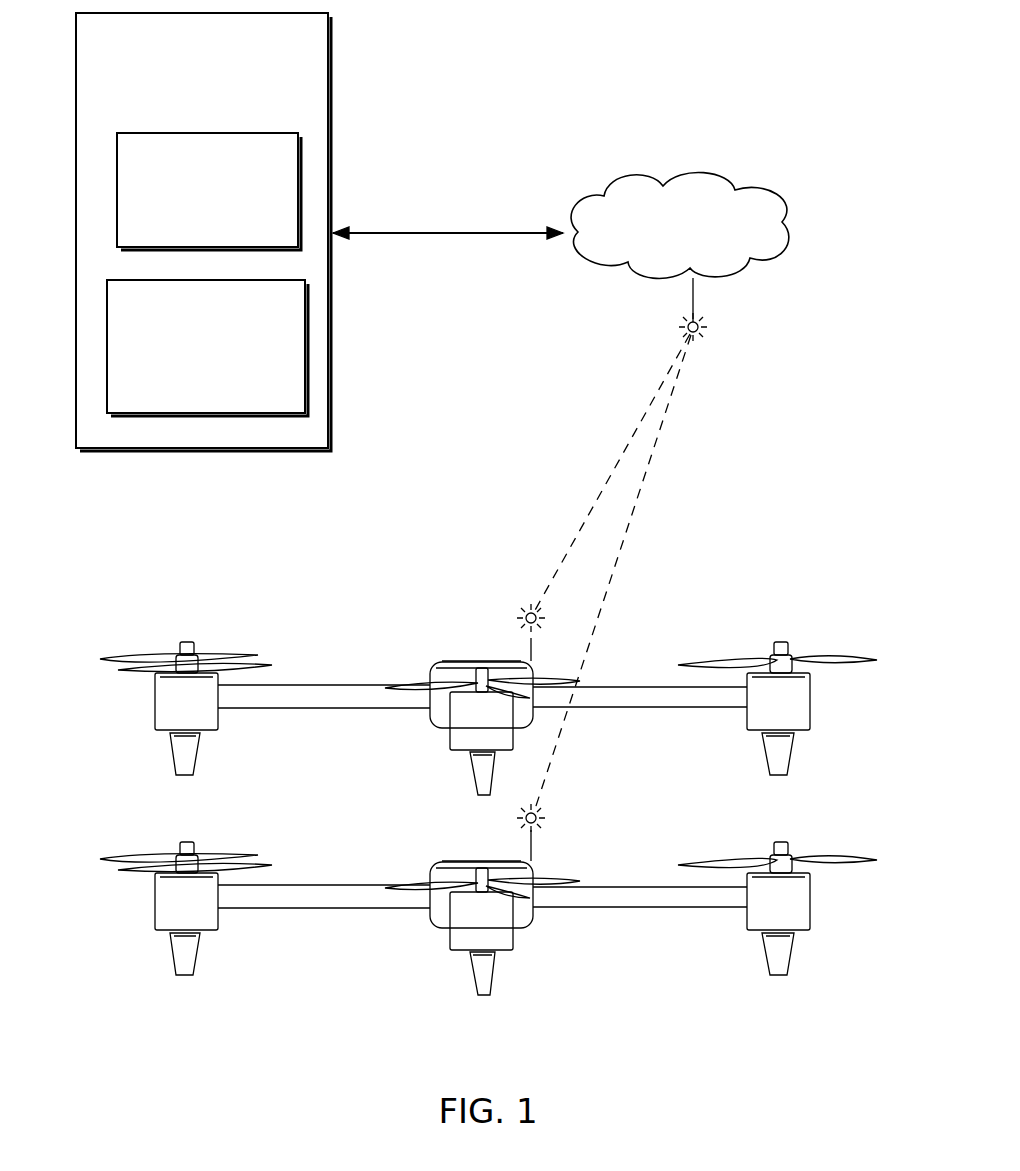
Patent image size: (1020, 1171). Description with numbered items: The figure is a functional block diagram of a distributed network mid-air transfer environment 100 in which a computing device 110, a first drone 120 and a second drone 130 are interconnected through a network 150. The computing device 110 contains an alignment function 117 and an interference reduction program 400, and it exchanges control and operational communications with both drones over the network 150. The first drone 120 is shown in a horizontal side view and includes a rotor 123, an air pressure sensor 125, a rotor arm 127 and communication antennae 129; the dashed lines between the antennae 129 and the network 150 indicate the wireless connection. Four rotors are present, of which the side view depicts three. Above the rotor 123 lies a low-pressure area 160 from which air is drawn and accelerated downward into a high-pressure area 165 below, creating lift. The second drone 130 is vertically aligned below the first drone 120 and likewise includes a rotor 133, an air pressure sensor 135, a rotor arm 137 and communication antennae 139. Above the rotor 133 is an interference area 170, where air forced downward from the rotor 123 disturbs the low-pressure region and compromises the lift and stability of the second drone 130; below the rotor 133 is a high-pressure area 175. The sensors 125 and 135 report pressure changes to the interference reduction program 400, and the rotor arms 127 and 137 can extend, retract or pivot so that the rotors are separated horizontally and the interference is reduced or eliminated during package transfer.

The distributed network mid-air transfer environment 100 is at (757, 96).
The computing device 110 is at (229, 112).
The alignment function 117 is at (229, 232).
The interference reduction program 400 is at (229, 401).
The network 150 is at (759, 165).
The first drone 120 is at (87, 565).
The second drone 130 is at (87, 983).
The rotor 123 is at (290, 662).
The air pressure sensor 125 is at (193, 643).
The rotor arm 127 is at (322, 711).
The communication antennae 129 is at (531, 638).
The rotor 133 is at (290, 862).
The air pressure sensor 135 is at (193, 843).
The rotor arm 137 is at (322, 911).
The communication antennae 139 is at (533, 840).
The low-pressure area 160 is at (105, 570).
The high-pressure area 165 is at (105, 675).
The interference area 170 is at (105, 773).
The high-pressure area 175 is at (105, 875).